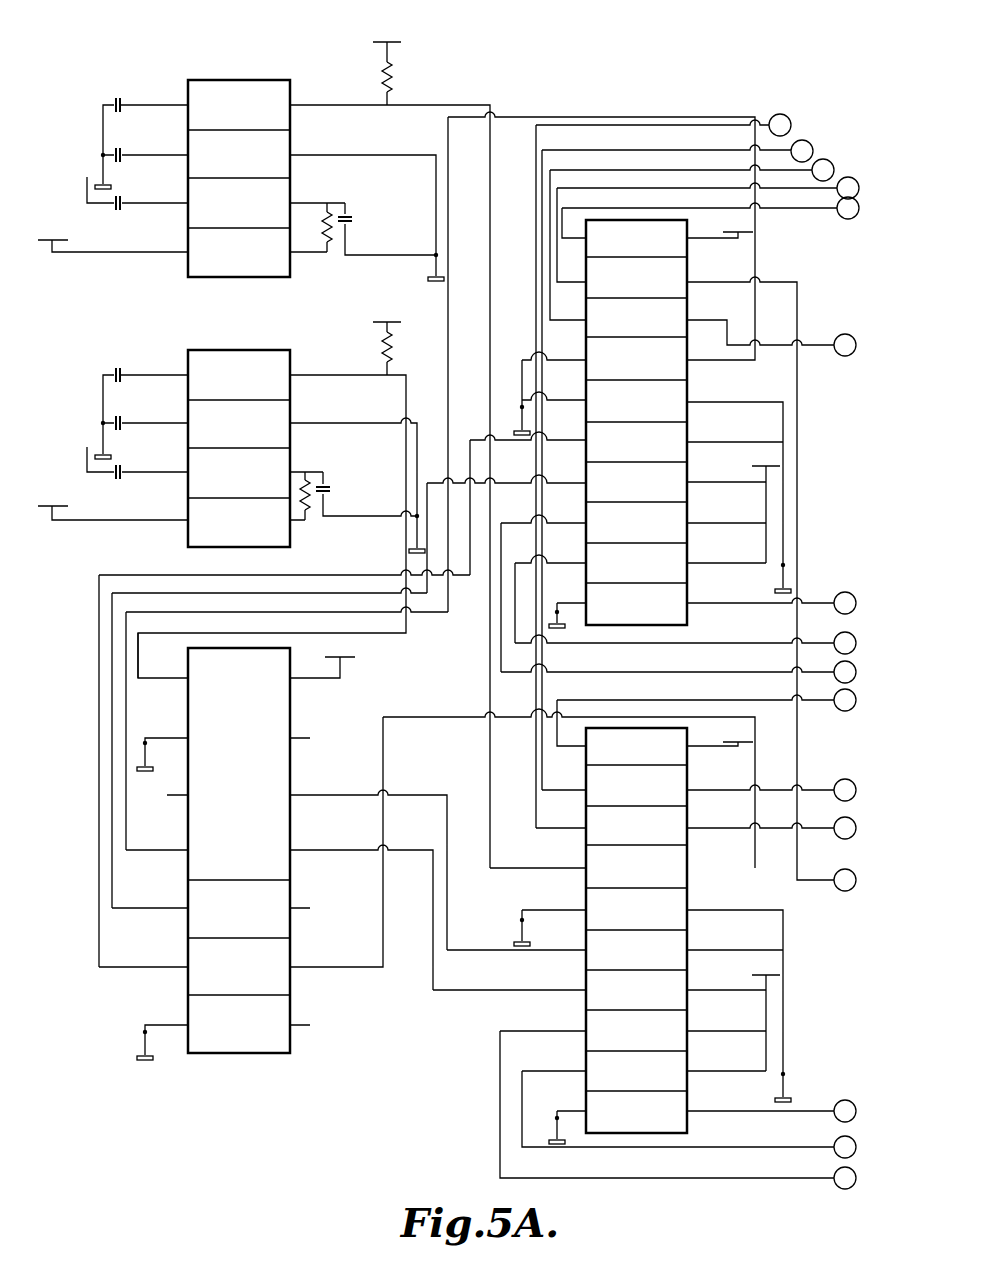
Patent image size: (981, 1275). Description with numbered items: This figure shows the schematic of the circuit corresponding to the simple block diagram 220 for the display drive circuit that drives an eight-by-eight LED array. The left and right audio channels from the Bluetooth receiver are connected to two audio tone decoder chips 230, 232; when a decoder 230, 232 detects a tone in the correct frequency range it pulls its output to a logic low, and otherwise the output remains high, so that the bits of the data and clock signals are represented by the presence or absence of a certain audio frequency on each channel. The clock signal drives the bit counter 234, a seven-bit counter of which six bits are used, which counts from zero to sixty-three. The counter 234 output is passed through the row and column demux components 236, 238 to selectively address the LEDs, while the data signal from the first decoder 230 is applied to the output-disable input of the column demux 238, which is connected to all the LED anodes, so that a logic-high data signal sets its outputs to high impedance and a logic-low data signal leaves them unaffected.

The block diagram 220 is at (645, 75).
The audio tone decoder chip 232 is at (212, 80).
The audio tone decoder chip 230 is at (212, 350).
The bit counter 234 is at (237, 1053).
The row demux component 236 is at (690, 612).
The column demux 238 is at (690, 1120).